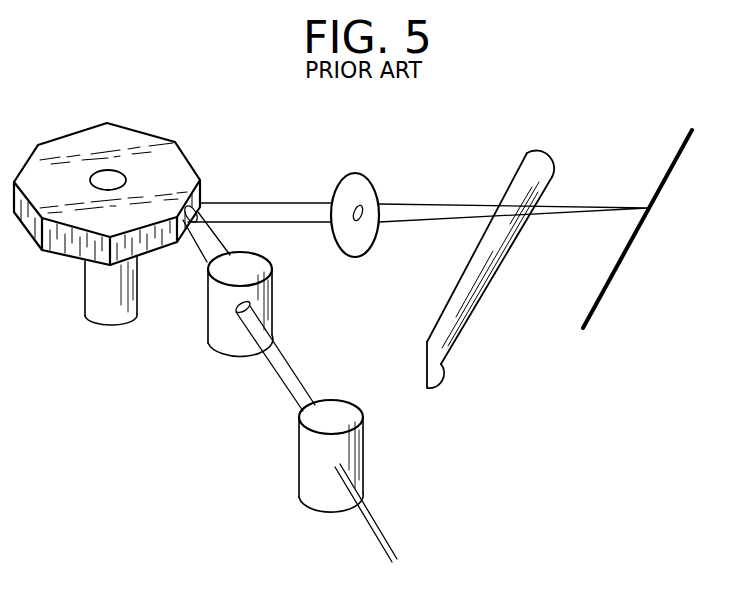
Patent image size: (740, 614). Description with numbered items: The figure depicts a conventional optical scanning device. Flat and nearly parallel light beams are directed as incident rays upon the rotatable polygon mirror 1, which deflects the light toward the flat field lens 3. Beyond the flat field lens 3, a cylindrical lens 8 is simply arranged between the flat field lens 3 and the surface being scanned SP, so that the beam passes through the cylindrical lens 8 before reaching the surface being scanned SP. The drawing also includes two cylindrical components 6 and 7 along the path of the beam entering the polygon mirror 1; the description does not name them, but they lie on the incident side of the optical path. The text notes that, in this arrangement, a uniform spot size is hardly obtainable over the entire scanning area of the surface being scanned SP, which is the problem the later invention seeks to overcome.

The rotatable polygon mirror 1 is at (138, 138).
The flat field lens 3 is at (352, 182).
The laser light source 6 is at (307, 480).
The light modulator 7 is at (217, 328).
The cylindrical lens 8 is at (543, 152).
The surface being scanned SP is at (600, 305).